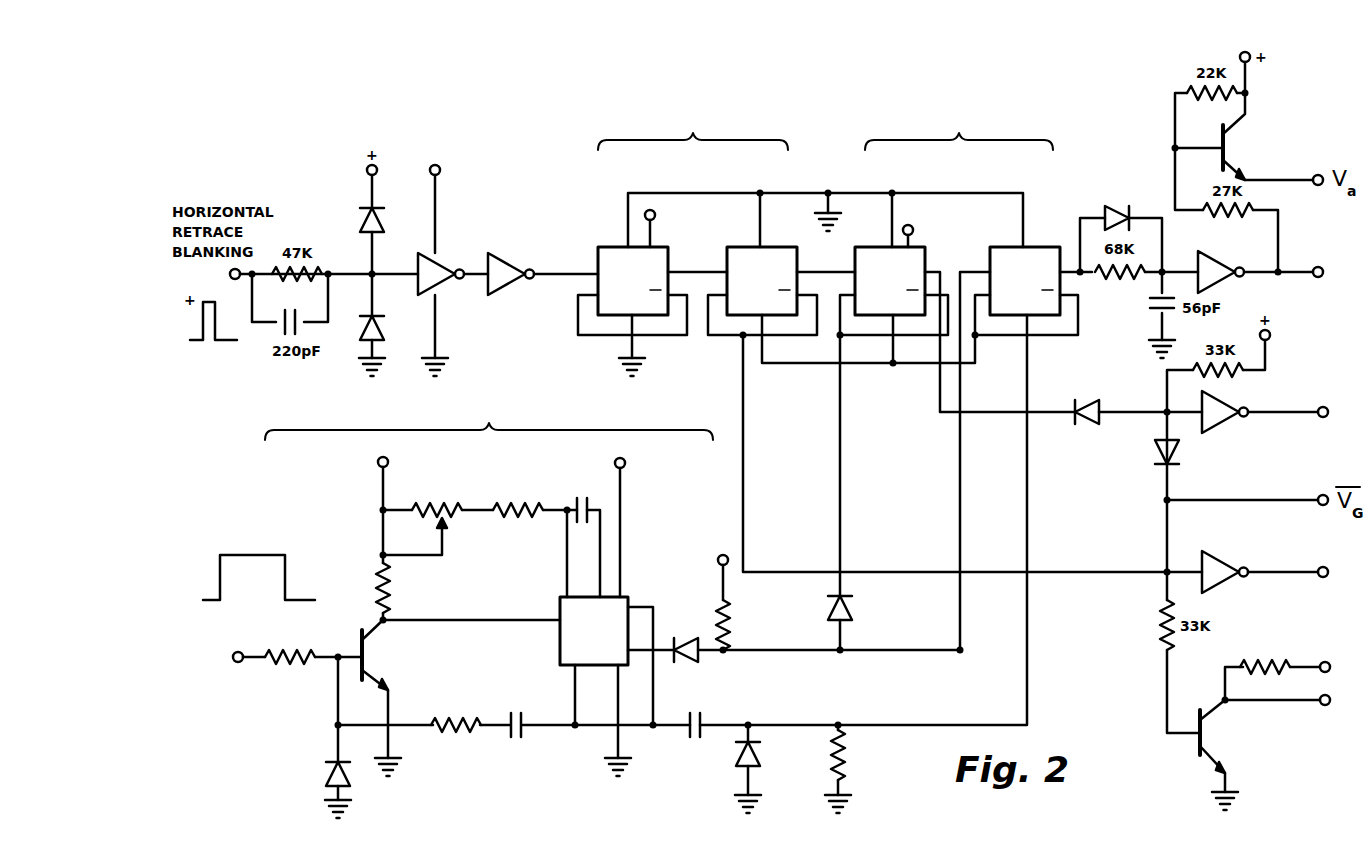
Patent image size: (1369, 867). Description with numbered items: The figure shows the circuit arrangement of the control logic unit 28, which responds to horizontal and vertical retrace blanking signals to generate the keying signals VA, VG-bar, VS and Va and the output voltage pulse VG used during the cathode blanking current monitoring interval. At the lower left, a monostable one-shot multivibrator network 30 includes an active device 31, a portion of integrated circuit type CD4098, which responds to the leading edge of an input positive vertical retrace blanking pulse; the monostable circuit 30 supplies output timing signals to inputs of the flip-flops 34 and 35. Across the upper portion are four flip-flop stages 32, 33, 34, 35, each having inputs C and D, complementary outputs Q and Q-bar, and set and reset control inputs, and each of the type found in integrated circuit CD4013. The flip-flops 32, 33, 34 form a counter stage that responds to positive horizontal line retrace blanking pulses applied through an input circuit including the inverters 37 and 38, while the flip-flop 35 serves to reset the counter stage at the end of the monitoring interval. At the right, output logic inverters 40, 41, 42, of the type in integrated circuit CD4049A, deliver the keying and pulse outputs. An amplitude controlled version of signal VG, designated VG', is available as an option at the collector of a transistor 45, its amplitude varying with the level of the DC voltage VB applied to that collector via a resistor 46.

The control logic unit 28 is at (897, 500).
The monostable multivibrator network 30 is at (511, 412).
The active device 31 is at (558, 649).
The flip-flop stage 32 is at (610, 221).
The flip-flop stage 33 is at (745, 226).
The flip-flop stage 34 is at (921, 224).
The flip-flop stage 35 is at (1054, 227).
The inverter 37 is at (459, 280).
The inverter 38 is at (524, 282).
The output logic inverter 40 is at (1213, 255).
The output logic inverter 41 is at (1222, 428).
The output logic inverter 42 is at (1216, 554).
The transistor 45 is at (1242, 757).
The resistor 46 is at (1265, 676).